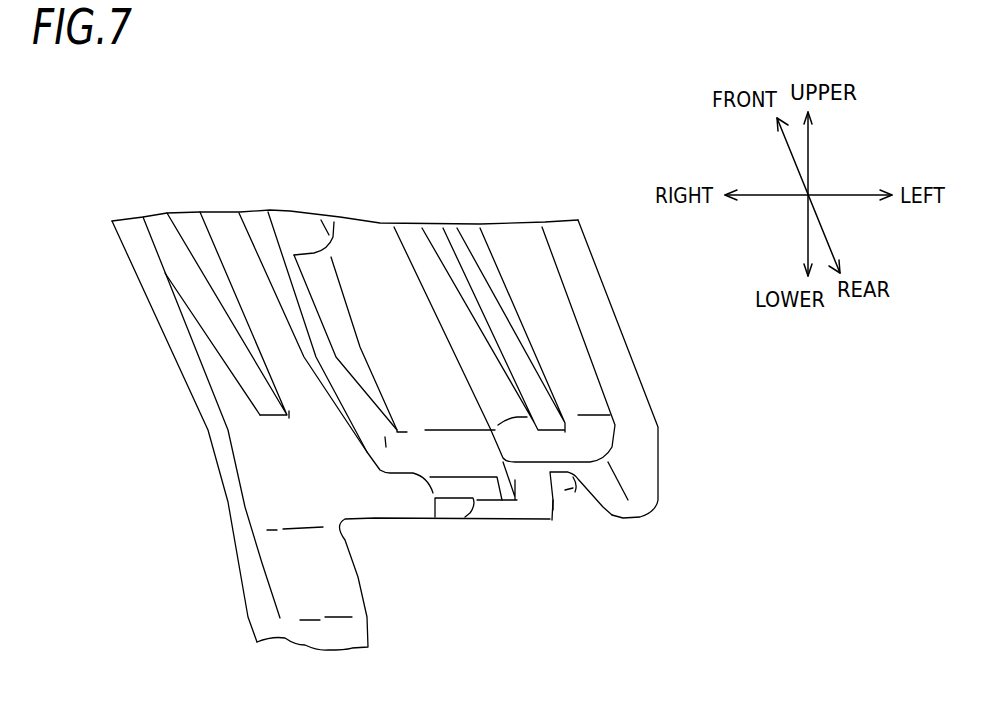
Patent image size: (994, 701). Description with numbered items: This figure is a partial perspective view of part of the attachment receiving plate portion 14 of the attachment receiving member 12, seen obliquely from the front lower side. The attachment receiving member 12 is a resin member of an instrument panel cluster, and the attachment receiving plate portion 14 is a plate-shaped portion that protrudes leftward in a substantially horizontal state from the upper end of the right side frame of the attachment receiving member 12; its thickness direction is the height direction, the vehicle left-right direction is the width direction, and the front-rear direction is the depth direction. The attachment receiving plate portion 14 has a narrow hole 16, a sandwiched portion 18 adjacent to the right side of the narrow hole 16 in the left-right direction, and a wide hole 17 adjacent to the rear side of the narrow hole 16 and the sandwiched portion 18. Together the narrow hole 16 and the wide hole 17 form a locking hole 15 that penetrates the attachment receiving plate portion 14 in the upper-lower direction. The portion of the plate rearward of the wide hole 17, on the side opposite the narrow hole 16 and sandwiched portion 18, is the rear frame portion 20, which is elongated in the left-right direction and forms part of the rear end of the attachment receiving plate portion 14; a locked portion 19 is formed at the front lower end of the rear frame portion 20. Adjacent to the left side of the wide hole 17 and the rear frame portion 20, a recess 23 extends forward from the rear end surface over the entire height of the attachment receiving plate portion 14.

The attachment receiving member 12 is at (592, 209).
The attachment receiving plate portion 14 is at (626, 340).
The locking hole 15 is at (336, 301).
The narrow hole 16 is at (342, 220).
The wide hole 17 is at (333, 313).
The sandwiched portion 18 is at (298, 223).
The locked portion 19 is at (467, 520).
The rear frame portion 20 is at (462, 447).
The recess 23 is at (573, 510).